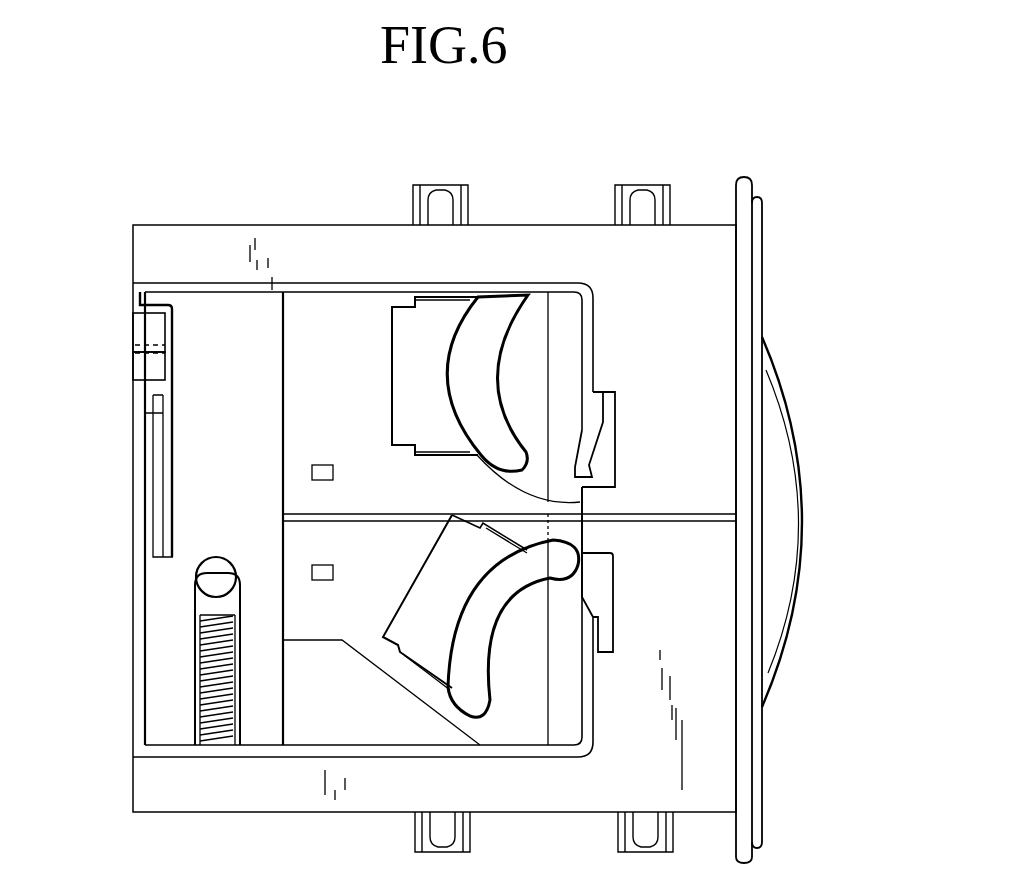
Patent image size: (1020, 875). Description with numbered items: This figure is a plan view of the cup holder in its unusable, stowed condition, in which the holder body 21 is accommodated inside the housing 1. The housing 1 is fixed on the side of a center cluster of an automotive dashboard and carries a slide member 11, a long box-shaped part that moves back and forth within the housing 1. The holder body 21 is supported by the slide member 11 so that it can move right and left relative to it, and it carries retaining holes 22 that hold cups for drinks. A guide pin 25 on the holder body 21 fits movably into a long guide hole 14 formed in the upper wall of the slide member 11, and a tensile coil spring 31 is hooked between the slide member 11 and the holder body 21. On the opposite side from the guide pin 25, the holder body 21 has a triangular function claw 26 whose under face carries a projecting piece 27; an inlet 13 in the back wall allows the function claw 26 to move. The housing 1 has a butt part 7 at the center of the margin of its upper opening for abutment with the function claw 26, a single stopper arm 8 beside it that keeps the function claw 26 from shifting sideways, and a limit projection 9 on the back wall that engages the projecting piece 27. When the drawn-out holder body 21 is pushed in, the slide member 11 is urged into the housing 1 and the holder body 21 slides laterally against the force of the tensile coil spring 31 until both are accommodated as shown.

The housing 1 is at (190, 218).
The butt part 7 is at (608, 545).
The stopper arm 8 is at (590, 460).
The limit projection 9 is at (182, 380).
The slide member 11 is at (255, 386).
The inlet 13 is at (150, 460).
The long guide hole 14 is at (156, 718).
The holder body 21 is at (815, 492).
The retaining holes 22 is at (530, 335).
The guide pin 25 is at (222, 570).
The function claw 26 is at (140, 330).
The projecting piece 27 is at (135, 352).
The tensile coil spring 31 is at (217, 735).